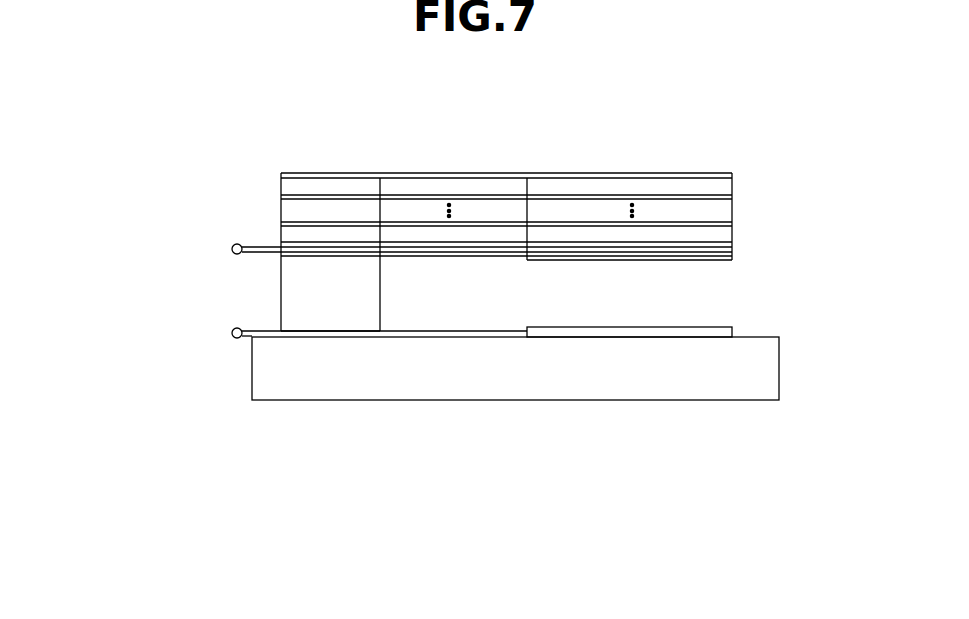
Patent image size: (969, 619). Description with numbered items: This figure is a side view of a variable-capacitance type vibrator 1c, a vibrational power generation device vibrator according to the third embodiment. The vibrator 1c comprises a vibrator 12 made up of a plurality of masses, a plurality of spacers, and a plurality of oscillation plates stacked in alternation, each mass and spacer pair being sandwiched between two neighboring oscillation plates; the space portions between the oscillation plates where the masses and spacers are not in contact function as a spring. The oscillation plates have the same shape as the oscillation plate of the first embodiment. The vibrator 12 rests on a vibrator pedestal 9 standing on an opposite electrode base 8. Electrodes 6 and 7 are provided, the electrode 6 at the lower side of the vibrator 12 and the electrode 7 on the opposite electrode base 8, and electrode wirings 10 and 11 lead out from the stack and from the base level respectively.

The variable-capacitance type vibrator 1c is at (774, 130).
The vibrator 12 is at (506, 216).
The electrode 6 is at (597, 255).
The electrode 7 is at (663, 332).
The opposite electrode base 8 is at (768, 370).
The vibrator pedestal 9 is at (286, 295).
The electrode wiring 10 is at (232, 249).
The electrode wiring 11 is at (232, 333).